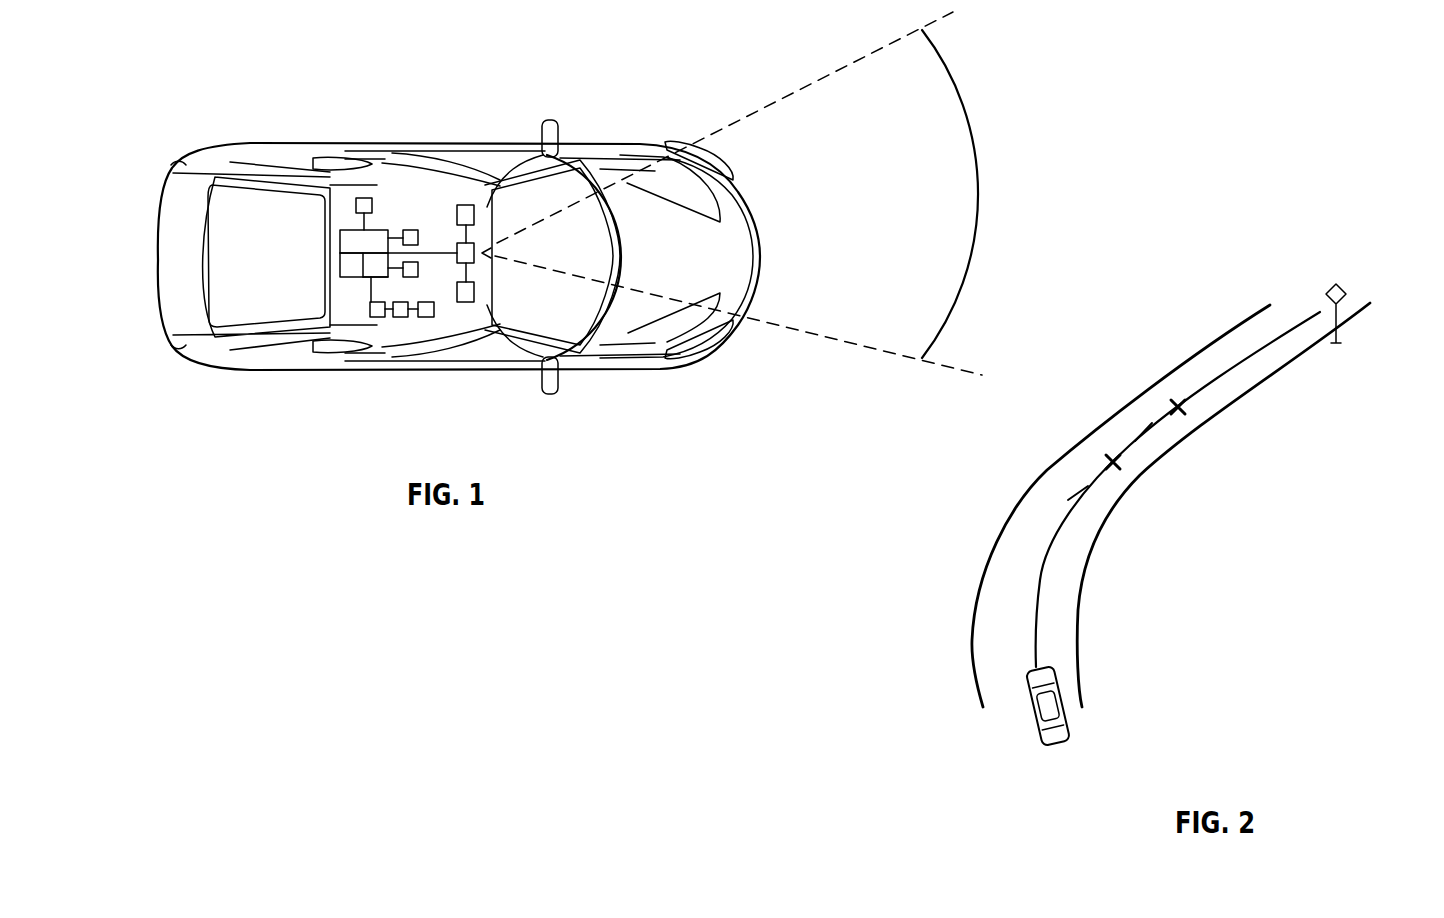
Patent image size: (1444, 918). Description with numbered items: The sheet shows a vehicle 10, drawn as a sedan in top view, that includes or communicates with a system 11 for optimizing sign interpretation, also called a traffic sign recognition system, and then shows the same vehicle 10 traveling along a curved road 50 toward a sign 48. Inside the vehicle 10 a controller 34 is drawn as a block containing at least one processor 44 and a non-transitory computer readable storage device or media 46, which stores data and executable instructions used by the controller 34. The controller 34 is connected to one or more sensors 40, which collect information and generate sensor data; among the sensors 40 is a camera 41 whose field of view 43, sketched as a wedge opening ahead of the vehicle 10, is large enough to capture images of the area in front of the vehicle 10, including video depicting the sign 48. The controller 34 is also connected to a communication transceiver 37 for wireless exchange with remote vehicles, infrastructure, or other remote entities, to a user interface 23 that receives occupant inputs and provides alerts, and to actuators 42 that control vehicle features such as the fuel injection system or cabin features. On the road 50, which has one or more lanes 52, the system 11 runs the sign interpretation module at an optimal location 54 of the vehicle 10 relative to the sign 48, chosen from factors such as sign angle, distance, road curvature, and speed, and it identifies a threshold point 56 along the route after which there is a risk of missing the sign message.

In FIG. 1, the vehicle 10 is at (613, 150).
In FIG. 2, the vehicle 10 is at (1072, 730).
In FIG. 1, the system for optimizing sign interpretation 11 is at (395, 230).
In FIG. 1, the user interface 23 is at (420, 277).
In FIG. 1, the controller 34 is at (343, 229).
In FIG. 1, the communication transceivers 37 is at (363, 197).
In FIG. 1, the sensors 40 is at (472, 205).
In FIG. 1, the camera 41 is at (478, 251).
In FIG. 1, the actuators 42 is at (377, 317).
In FIG. 1, the field of view 43 is at (978, 193).
In FIG. 1, the processor 44 is at (339, 277).
In FIG. 1, the non-transitory computer readable storage device or media 46 is at (367, 278).
In FIG. 2, the sign 48 is at (1348, 297).
In FIG. 2, the road 50 is at (1228, 405).
In FIG. 2, the lanes 52 is at (998, 545).
In FIG. 2, the optimal location 54 is at (1150, 437).
In FIG. 2, the threshold point 56 is at (1178, 400).